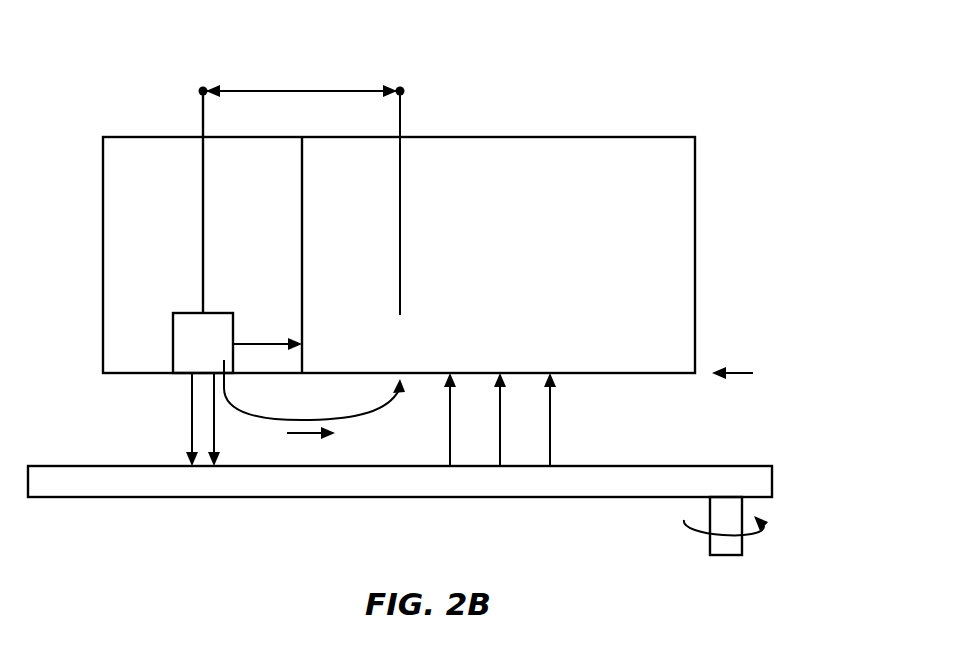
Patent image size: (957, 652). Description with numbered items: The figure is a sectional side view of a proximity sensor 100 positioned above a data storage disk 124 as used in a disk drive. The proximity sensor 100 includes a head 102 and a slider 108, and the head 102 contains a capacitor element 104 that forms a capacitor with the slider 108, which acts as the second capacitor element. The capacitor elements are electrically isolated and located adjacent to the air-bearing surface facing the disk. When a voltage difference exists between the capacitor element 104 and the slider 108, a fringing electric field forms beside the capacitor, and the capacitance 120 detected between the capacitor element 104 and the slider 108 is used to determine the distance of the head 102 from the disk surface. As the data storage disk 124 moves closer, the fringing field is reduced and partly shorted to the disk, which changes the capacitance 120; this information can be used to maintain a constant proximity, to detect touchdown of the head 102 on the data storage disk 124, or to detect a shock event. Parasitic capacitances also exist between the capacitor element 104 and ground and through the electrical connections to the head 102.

The proximity sensor 100 is at (121, 37).
The head 102 is at (152, 152).
The capacitor element 104 is at (190, 312).
The slider 108 is at (443, 152).
The capacitance 120 is at (298, 90).
The data storage disk 124 is at (115, 466).